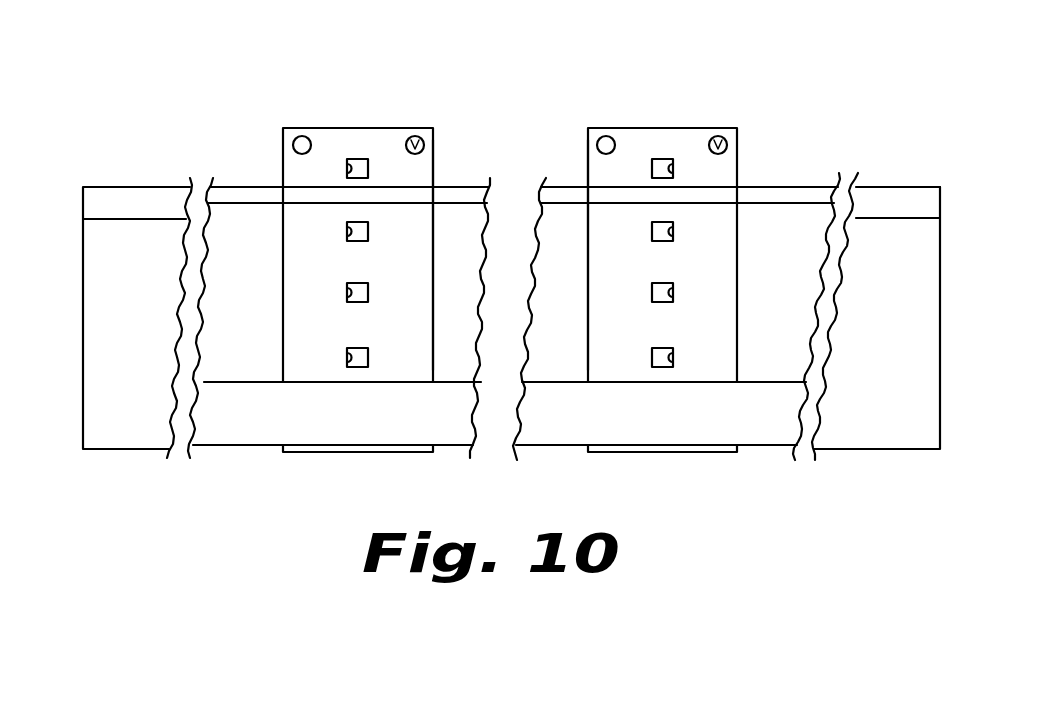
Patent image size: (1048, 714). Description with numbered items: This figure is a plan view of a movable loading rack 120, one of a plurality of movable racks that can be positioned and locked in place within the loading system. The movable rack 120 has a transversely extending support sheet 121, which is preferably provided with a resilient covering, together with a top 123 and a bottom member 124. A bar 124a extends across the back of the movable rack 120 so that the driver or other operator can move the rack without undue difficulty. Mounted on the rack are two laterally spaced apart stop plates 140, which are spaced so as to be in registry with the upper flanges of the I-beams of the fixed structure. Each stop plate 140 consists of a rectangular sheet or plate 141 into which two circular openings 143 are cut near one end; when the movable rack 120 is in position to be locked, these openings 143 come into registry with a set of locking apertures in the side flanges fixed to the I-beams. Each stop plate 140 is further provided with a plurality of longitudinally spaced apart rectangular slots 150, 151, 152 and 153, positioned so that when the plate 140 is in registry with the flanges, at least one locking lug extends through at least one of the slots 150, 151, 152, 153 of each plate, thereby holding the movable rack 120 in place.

The movable rack 120 is at (561, 321).
The support sheet 121 is at (905, 323).
The top 123 is at (898, 200).
The bottom member 124 is at (747, 425).
The bar 124a is at (774, 193).
The stop plate 140 is at (521, 206).
The rectangular sheet 141 is at (435, 165).
The circular opening 143 is at (415, 137).
The rectangular slot 150 is at (348, 165).
The rectangular slot 151 is at (347, 231).
The rectangular slot 152 is at (347, 295).
The rectangular slot 153 is at (347, 360).